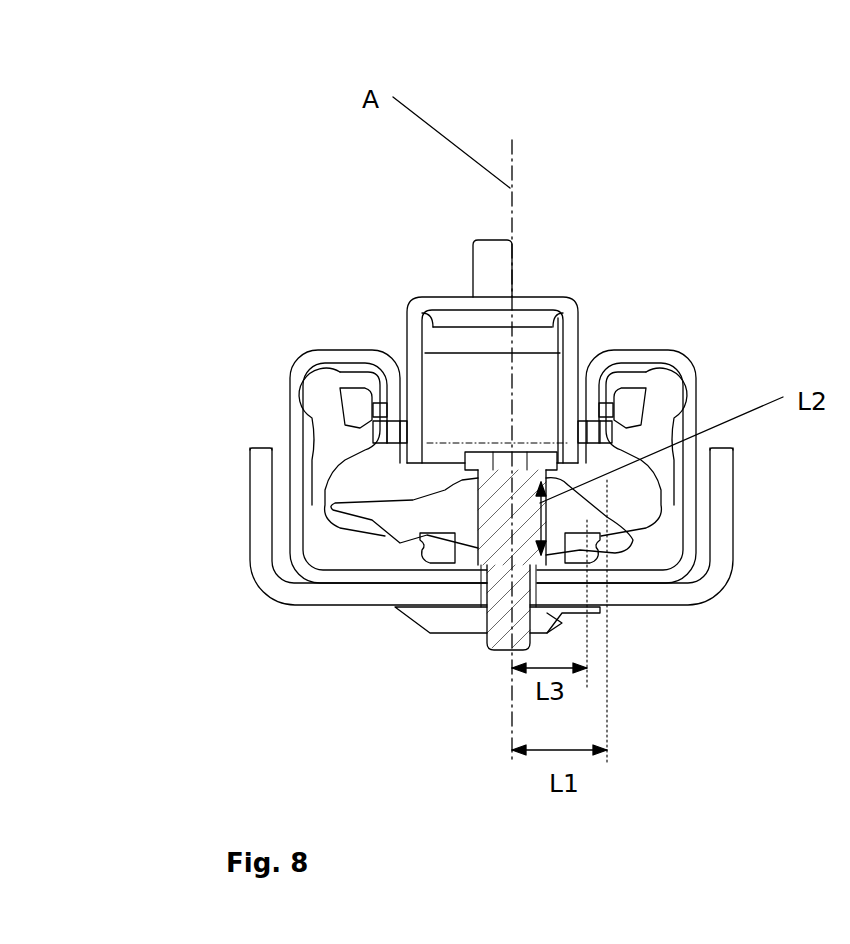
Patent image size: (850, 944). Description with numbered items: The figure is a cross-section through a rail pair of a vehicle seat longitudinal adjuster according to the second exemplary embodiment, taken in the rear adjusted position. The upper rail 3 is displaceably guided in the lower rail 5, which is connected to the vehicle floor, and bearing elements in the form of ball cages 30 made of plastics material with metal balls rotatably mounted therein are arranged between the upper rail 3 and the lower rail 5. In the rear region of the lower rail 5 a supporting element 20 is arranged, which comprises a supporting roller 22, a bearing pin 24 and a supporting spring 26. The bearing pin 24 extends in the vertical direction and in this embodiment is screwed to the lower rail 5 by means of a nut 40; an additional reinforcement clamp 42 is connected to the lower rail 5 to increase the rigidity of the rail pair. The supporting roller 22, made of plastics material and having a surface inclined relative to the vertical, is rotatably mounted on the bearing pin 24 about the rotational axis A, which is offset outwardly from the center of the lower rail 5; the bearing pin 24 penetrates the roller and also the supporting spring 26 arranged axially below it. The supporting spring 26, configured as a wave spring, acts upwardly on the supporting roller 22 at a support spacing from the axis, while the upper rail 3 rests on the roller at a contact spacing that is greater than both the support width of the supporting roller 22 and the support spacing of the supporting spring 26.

The upper rail 3 is at (417, 300).
The lower rail 5 is at (373, 363).
The ball cage 30 is at (347, 387).
The supporting element 20 is at (530, 436).
The supporting roller 22 is at (453, 502).
The bearing pin 24 is at (495, 540).
The supporting spring 26 is at (438, 552).
The reinforcement clamp 42 is at (373, 593).
The nut 40 is at (487, 617).